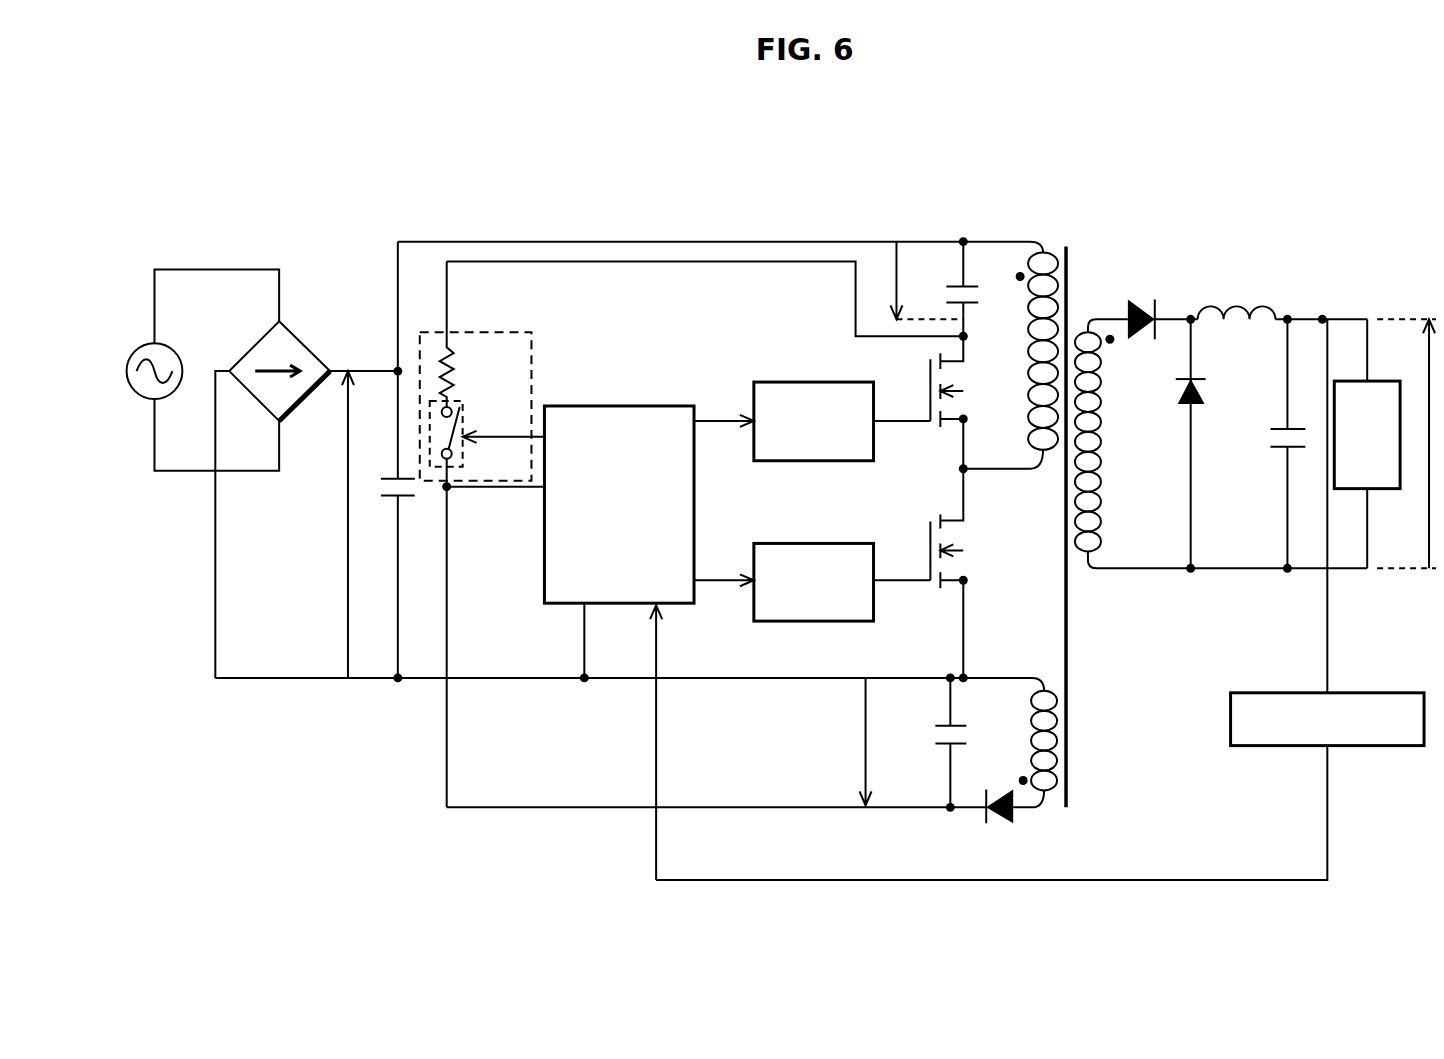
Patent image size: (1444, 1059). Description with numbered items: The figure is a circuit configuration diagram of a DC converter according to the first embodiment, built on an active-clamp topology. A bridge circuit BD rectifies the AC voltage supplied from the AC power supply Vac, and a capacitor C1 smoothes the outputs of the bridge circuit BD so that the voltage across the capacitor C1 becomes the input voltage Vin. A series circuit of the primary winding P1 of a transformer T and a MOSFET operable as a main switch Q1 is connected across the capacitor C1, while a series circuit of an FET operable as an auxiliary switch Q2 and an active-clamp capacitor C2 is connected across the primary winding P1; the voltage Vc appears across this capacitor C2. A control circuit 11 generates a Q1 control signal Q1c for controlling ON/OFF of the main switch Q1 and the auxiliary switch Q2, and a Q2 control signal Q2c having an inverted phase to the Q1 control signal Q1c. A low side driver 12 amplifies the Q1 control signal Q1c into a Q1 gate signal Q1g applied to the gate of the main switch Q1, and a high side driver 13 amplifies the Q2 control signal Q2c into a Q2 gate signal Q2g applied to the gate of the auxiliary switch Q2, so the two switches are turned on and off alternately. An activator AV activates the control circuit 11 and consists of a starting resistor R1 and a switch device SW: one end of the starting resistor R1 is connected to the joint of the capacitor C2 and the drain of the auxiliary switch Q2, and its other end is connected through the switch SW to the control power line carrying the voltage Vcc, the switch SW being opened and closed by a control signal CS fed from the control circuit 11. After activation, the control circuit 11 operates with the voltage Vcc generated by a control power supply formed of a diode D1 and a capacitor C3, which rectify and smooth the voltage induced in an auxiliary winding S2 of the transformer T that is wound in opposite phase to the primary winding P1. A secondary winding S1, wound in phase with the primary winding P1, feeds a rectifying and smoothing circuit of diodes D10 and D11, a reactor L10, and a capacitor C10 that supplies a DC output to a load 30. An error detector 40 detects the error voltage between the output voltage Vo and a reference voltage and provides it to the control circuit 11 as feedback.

The AC power supply Vac is at (142, 345).
The bridge circuit BD is at (312, 346).
The capacitor C1 is at (388, 462).
The input voltage Vin is at (340, 524).
The activator AV is at (518, 332).
The starting resistor R1 is at (460, 334).
The switch device SW is at (464, 405).
The control signal CS is at (485, 441).
The control circuit 11 is at (605, 406).
The high side driver 13 is at (818, 382).
The low side driver 12 is at (797, 624).
The Q2 control signal Q2c is at (712, 420).
The Q1 control signal Q1c is at (713, 580).
The auxiliary switch Q2 is at (928, 404).
The Q2 gate signal Q2g is at (910, 424).
The main switch Q1 is at (929, 576).
The Q1 gate signal Q1g is at (910, 584).
The clamp capacitor voltage Vc is at (910, 281).
The capacitor C2 is at (943, 289).
The primary winding P1 is at (1010, 361).
The transformer T is at (1066, 242).
The secondary winding S1 is at (1221, 443).
The diode D10 is at (1163, 301).
The reactor L10 is at (1276, 293).
The diode D11 is at (1213, 445).
The capacitor C10 is at (1260, 445).
The load 30 is at (1347, 492).
The output voltage Vo is at (1406, 443).
The error detector 40 is at (1297, 694).
The auxiliary winding S2 is at (1018, 745).
The capacitor C3 is at (931, 742).
The diode D1 is at (730, 826).
The voltage Vcc is at (858, 741).